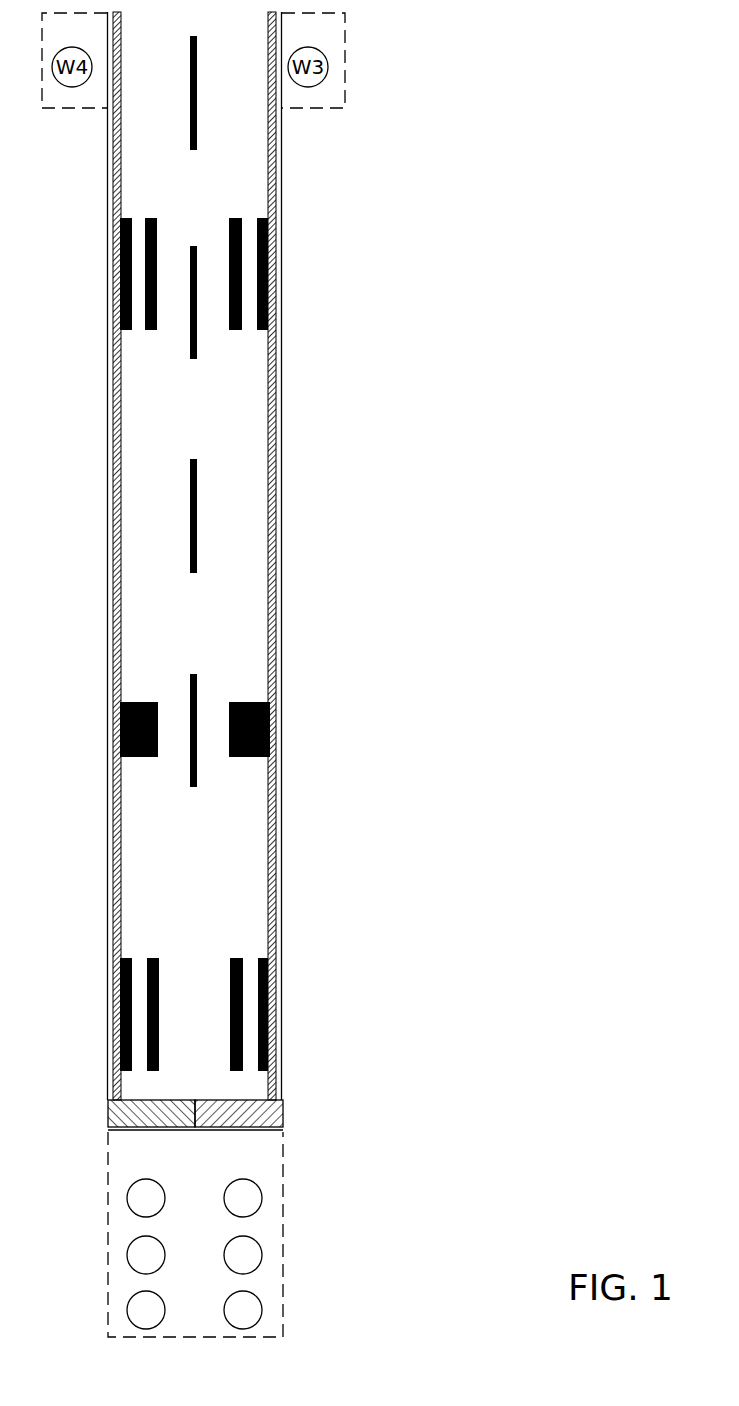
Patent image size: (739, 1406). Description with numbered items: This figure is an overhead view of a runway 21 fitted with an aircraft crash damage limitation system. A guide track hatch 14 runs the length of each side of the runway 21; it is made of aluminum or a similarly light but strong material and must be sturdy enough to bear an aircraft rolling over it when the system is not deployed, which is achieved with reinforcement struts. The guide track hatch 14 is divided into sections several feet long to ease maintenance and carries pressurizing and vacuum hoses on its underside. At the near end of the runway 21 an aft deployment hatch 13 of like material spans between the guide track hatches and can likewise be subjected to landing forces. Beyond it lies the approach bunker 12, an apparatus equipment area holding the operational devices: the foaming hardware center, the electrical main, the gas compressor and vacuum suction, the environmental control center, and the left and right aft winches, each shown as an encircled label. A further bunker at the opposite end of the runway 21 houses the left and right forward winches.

The approach bunker 12 is at (202, 1177).
The aft deployment hatch 13 is at (108, 1110).
The guide track hatch 14 is at (272, 883).
The runway 21 is at (245, 563).